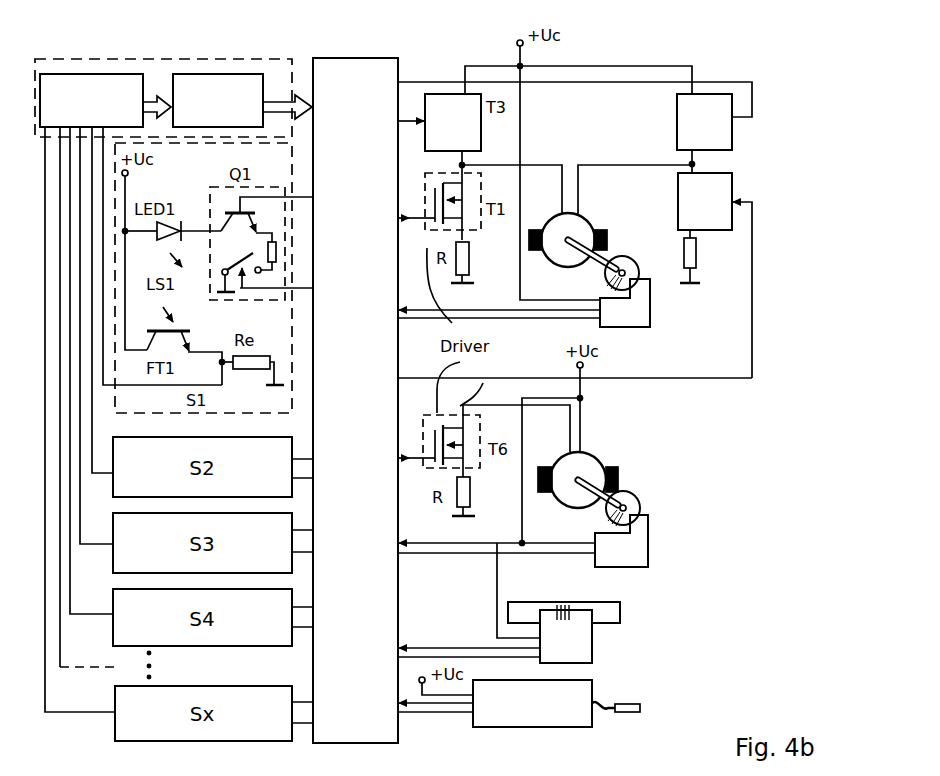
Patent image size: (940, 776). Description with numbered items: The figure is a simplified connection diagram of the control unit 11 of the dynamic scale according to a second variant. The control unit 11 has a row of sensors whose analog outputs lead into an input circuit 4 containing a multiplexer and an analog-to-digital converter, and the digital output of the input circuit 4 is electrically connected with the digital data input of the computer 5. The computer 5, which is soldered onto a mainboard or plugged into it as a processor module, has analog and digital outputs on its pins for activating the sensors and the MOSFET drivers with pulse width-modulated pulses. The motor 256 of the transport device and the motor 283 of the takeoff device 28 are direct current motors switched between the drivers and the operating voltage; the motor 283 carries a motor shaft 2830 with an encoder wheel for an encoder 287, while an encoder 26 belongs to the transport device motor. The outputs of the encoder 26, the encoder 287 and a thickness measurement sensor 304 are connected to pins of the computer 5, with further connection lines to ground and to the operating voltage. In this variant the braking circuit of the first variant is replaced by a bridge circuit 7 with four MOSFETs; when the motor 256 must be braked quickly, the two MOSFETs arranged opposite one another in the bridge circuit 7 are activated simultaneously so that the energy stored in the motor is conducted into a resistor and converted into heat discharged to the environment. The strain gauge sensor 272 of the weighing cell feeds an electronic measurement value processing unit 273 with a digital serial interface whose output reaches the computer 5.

The input circuit 4 is at (148, 62).
The computer 5 is at (330, 62).
The control unit 11 is at (849, 146).
The bridge circuit 7 is at (768, 100).
The motor of the transport device 256 is at (557, 220).
The encoder 26 is at (655, 270).
The motor of the takeoff device 283 is at (595, 467).
The takeoff device 28 is at (742, 441).
The motor shaft 2830 is at (617, 484).
The encoder 287 is at (656, 508).
The thickness measurement sensor 304 is at (583, 648).
The electronic measurement value processing unit 273 is at (532, 703).
The strain gauge sensor (DMS) 272 is at (640, 707).